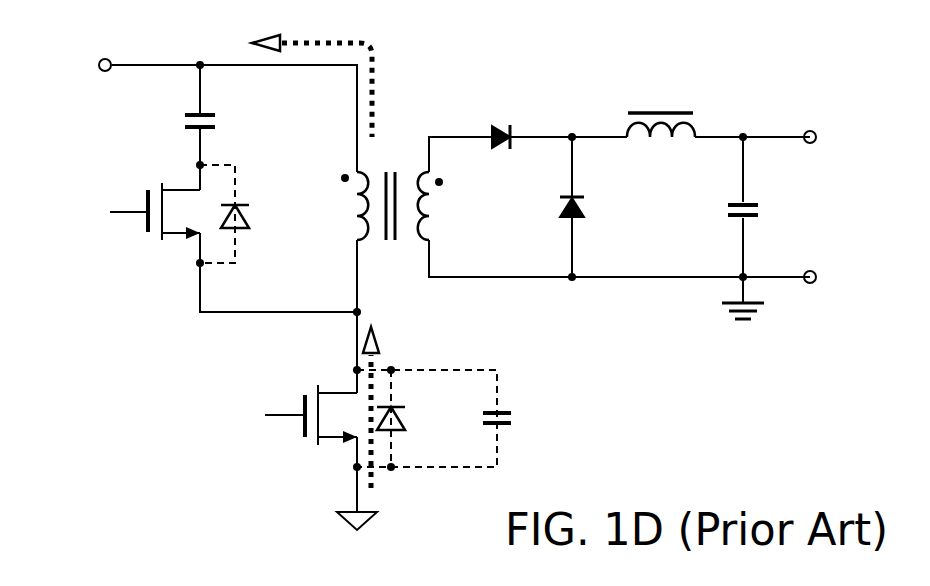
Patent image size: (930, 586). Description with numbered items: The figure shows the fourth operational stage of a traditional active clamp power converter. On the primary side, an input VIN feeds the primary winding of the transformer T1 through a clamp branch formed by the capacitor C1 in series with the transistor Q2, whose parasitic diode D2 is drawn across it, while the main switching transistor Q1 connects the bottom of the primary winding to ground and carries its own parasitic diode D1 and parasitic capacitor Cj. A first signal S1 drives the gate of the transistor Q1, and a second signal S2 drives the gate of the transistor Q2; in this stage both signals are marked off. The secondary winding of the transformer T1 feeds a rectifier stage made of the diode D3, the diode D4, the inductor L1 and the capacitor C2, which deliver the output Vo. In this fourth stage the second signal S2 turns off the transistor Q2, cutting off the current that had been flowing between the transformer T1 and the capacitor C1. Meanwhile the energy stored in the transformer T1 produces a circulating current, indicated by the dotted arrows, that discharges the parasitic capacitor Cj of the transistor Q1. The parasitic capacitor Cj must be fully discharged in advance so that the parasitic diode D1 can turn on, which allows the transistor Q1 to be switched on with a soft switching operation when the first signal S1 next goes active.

The input voltage terminal VIN is at (79, 66).
The output voltage terminal Vo is at (828, 203).
The capacitor C1 is at (218, 121).
The transistor Q2 is at (140, 188).
The second signal S2 is at (110, 230).
The parasitic diode D2 is at (250, 212).
The transformer T1 is at (391, 155).
The rectifier diode D3 is at (500, 126).
The freewheeling diode D4 is at (586, 207).
The output inductor L1 is at (660, 108).
The output capacitor C2 is at (762, 210).
The transistor Q1 is at (298, 392).
The first signal S1 is at (267, 433).
The parasitic diode D1 is at (408, 420).
The parasitic capacitor Cj is at (511, 420).